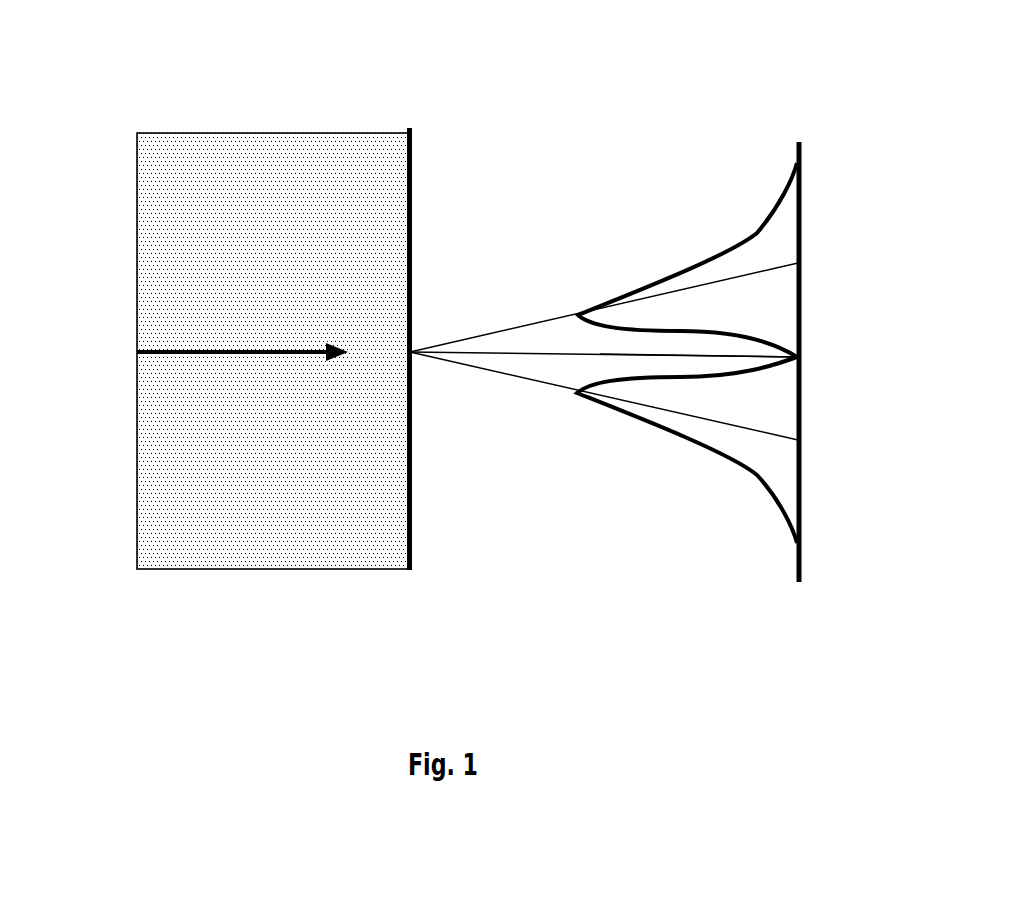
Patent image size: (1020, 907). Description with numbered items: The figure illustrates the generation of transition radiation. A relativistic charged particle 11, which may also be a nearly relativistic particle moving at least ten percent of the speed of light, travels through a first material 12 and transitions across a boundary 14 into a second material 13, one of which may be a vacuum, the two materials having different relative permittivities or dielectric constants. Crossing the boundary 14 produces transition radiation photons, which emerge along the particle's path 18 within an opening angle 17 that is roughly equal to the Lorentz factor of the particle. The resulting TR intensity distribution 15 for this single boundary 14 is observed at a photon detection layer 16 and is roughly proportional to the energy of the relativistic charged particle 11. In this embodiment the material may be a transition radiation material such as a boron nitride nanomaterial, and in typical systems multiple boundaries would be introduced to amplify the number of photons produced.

The relativistic charged particle 11 is at (217, 348).
The first material 12 is at (242, 190).
The second material 13 is at (485, 202).
The boundary 14 is at (410, 292).
The TR intensity distribution 15 is at (757, 475).
The photon detection layer 16 is at (800, 227).
The opening angle 17 is at (538, 330).
The particle's path 18 is at (590, 358).